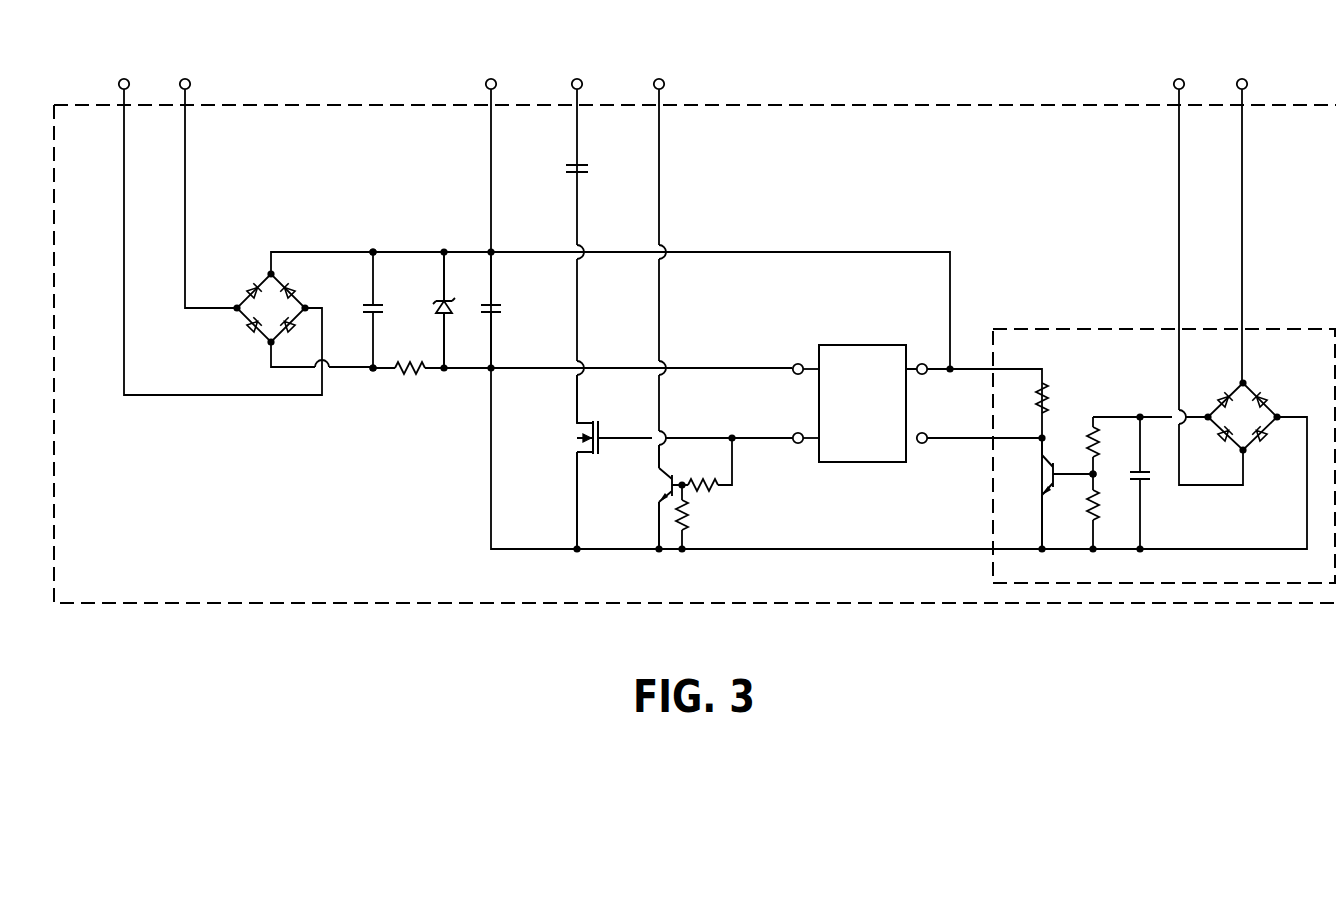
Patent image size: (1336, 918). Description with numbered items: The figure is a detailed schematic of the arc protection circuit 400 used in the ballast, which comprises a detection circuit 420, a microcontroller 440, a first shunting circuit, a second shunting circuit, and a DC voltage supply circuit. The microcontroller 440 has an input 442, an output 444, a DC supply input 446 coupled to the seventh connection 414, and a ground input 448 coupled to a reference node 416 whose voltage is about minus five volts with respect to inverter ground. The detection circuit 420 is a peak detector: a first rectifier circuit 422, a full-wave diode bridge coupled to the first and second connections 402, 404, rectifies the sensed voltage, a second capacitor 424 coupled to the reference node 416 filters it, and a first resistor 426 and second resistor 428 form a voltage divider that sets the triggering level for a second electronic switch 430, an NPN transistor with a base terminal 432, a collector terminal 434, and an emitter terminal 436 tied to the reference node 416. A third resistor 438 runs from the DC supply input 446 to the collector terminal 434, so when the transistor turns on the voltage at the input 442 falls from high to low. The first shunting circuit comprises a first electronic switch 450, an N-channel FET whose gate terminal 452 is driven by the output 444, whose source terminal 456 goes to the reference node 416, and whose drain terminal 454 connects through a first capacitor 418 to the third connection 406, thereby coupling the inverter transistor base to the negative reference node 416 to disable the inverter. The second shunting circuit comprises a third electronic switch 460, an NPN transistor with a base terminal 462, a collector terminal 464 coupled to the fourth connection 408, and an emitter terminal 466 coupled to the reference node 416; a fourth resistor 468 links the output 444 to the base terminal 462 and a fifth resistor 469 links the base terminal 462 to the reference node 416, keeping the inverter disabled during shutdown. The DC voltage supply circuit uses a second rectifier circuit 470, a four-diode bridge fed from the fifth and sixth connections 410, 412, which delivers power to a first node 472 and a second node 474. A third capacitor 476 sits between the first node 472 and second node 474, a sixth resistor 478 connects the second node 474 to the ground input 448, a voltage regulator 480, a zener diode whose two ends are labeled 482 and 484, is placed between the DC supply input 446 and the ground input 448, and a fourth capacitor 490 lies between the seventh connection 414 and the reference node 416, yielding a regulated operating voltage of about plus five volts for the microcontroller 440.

The arc protection circuit 400 is at (160, 546).
The first connection 402 is at (1173, 84).
The second connection 404 is at (1248, 84).
The third connection 406 is at (571, 84).
The fourth connection 408 is at (665, 84).
The fifth connection 410 is at (118, 84).
The sixth connection 412 is at (191, 84).
The seventh connection 414 is at (485, 84).
The reference node 416 is at (661, 552).
The first capacitor 418 is at (586, 164).
The detection circuit 420 is at (1127, 360).
The first rectifier circuit 422 is at (1258, 427).
The second capacitor 424 is at (1145, 471).
The first resistor 426 is at (1110, 443).
The second resistor 428 is at (1097, 512).
The second electronic switch 430 is at (1044, 476).
The first terminal (base) 432 is at (1088, 474).
The second terminal (collector) 434 is at (1040, 458).
The third terminal (emitter) 436 is at (1040, 504).
The third resistor 438 is at (1036, 404).
The microcontroller 440 is at (878, 410).
The input 442 is at (926, 432).
The output 444 is at (800, 432).
The DC supply input 446 is at (924, 363).
The ground input 448 is at (800, 363).
The first electronic switch 450 is at (576, 438).
The first terminal (gate) 452 is at (614, 432).
The second terminal (drain) 454 is at (576, 398).
The third terminal (source) 456 is at (576, 463).
The third electronic switch 460 is at (669, 486).
The first terminal (base) 462 is at (680, 481).
The second terminal (collector) 464 is at (658, 463).
The third terminal (emitter) 466 is at (658, 517).
The fourth resistor 468 is at (707, 481).
The fifth resistor 469 is at (689, 517).
The second rectifier circuit 470 is at (286, 318).
The first node 472 is at (374, 248).
The second node 474 is at (371, 373).
The third capacitor 476 is at (368, 302).
The sixth resistor 478 is at (407, 374).
The voltage regulator 480 is at (438, 312).
The anode 482 is at (443, 332).
The cathode 484 is at (443, 285).
The fourth capacitor 490 is at (487, 303).